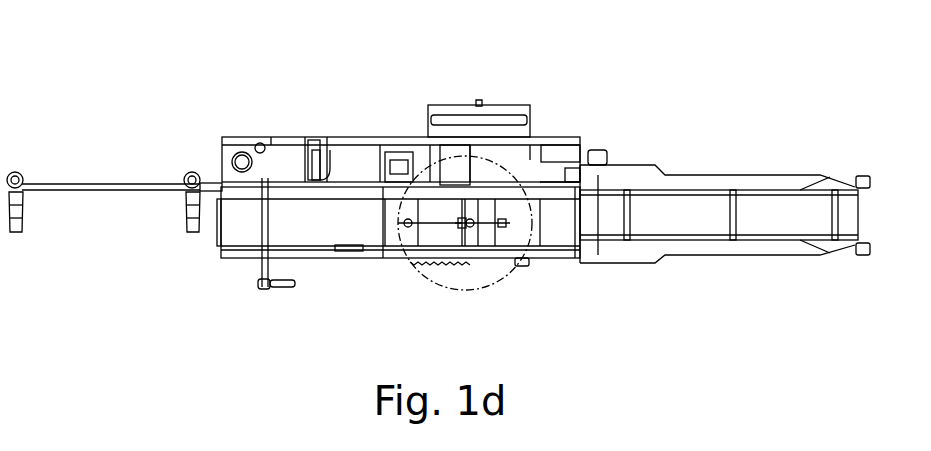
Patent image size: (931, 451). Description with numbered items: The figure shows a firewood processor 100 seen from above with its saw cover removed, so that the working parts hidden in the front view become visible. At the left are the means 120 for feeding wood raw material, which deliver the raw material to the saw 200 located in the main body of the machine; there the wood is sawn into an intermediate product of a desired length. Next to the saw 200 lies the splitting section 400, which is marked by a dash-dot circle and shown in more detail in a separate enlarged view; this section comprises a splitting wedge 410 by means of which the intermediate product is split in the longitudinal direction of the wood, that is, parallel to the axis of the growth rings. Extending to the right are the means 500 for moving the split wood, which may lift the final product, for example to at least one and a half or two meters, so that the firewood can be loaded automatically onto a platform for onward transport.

The firewood processor 100 is at (428, 83).
The means for feeding wood raw material 120 is at (83, 150).
The saw 200 is at (380, 215).
The splitting section 400 is at (412, 292).
The splitting wedge 410 is at (478, 226).
The means for moving the split wood 500 is at (740, 137).